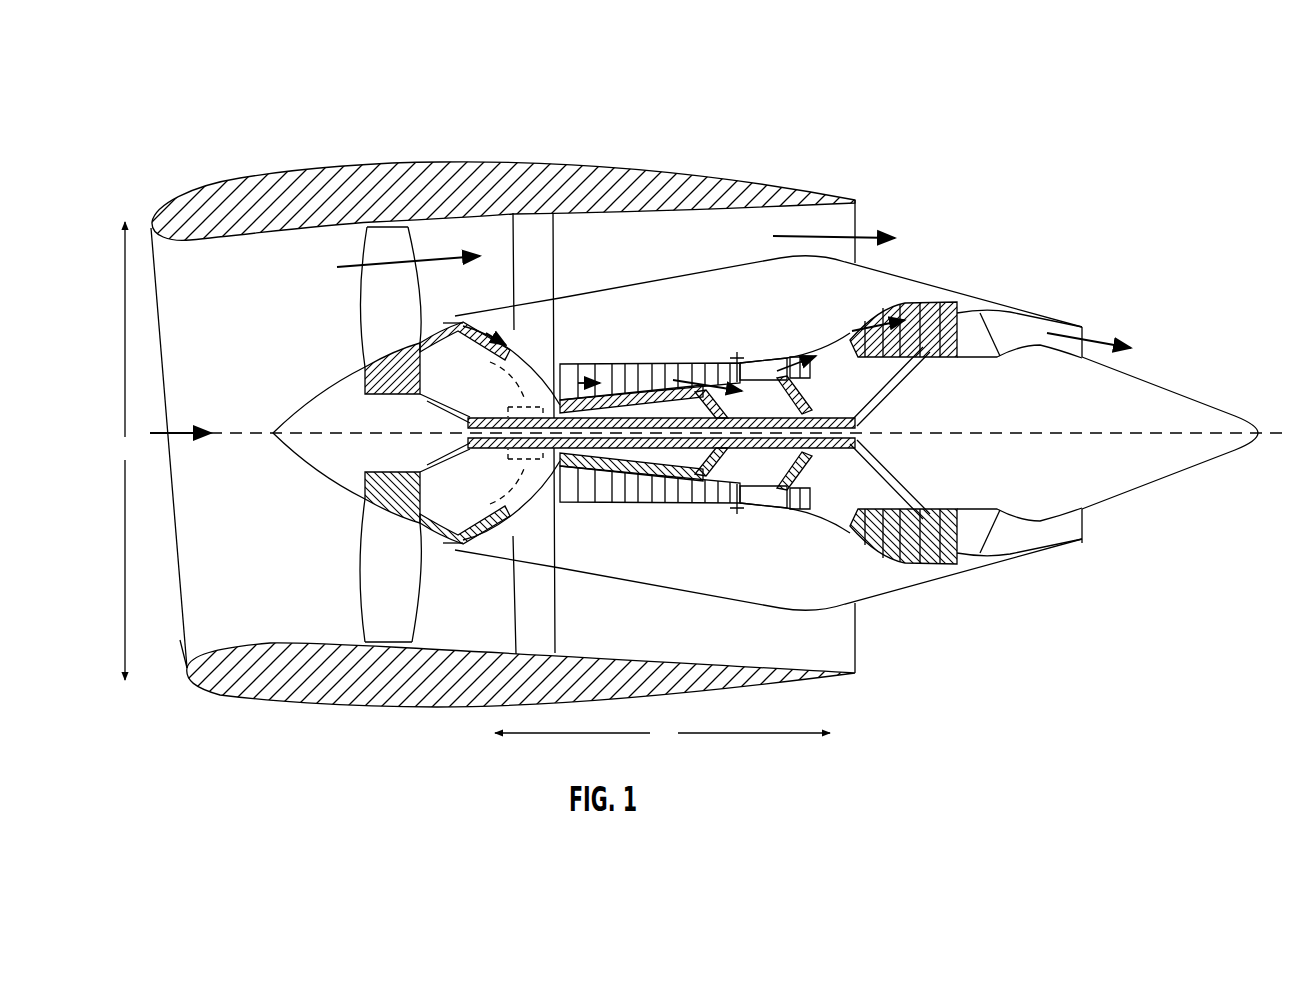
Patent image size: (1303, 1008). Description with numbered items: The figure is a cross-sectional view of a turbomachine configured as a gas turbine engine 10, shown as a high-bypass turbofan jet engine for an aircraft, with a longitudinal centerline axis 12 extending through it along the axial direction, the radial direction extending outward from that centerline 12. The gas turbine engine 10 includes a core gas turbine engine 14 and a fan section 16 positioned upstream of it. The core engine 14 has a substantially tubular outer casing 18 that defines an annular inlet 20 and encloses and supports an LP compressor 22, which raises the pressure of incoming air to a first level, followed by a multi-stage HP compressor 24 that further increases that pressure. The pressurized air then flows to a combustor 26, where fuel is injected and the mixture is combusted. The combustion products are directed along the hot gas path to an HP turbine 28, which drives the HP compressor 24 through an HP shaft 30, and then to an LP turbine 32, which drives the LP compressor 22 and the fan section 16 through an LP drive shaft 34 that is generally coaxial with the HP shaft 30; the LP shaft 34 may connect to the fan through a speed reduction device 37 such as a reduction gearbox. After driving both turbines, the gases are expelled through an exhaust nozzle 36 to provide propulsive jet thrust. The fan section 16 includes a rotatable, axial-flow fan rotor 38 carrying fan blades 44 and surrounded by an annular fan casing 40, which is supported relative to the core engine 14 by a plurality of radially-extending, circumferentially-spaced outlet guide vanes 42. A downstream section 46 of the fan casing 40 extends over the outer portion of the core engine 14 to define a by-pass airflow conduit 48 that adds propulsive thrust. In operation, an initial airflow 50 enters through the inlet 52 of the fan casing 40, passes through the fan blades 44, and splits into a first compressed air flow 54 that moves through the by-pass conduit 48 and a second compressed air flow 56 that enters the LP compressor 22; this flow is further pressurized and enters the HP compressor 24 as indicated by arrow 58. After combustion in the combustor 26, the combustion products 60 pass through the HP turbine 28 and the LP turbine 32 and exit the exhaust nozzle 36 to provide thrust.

The gas turbine engine 10 is at (997, 170).
The centerline axis 12 is at (1022, 432).
The core gas turbine engine 14 is at (716, 316).
The fan section 16 is at (503, 185).
The outer casing 18 is at (697, 595).
The annular inlet 20 is at (458, 541).
The LP compressor 22 is at (510, 515).
The HP compressor 24 is at (580, 500).
The combustor 26 is at (757, 493).
The HP turbine 28 is at (820, 500).
The HP shaft 30 is at (782, 401).
The LP turbine 32 is at (940, 565).
The LP drive shaft 34 is at (513, 407).
The exhaust nozzle 36 is at (1085, 330).
The speed reduction device 37 is at (490, 370).
The fan rotor 38 is at (422, 395).
The fan casing 40 is at (402, 707).
The outlet guide vanes 42 is at (555, 232).
The fan blades 44 is at (362, 580).
The downstream section of fan casing 46 is at (745, 182).
The by-pass airflow conduit 48 is at (664, 245).
The initial airflow 50 is at (178, 425).
The inlet 52 is at (183, 630).
The first compressed air flow 54 is at (380, 262).
The second compressed air flow 56 is at (452, 315).
The airflow entering HP compressor 58 is at (562, 364).
The combustion products 60 is at (797, 363).